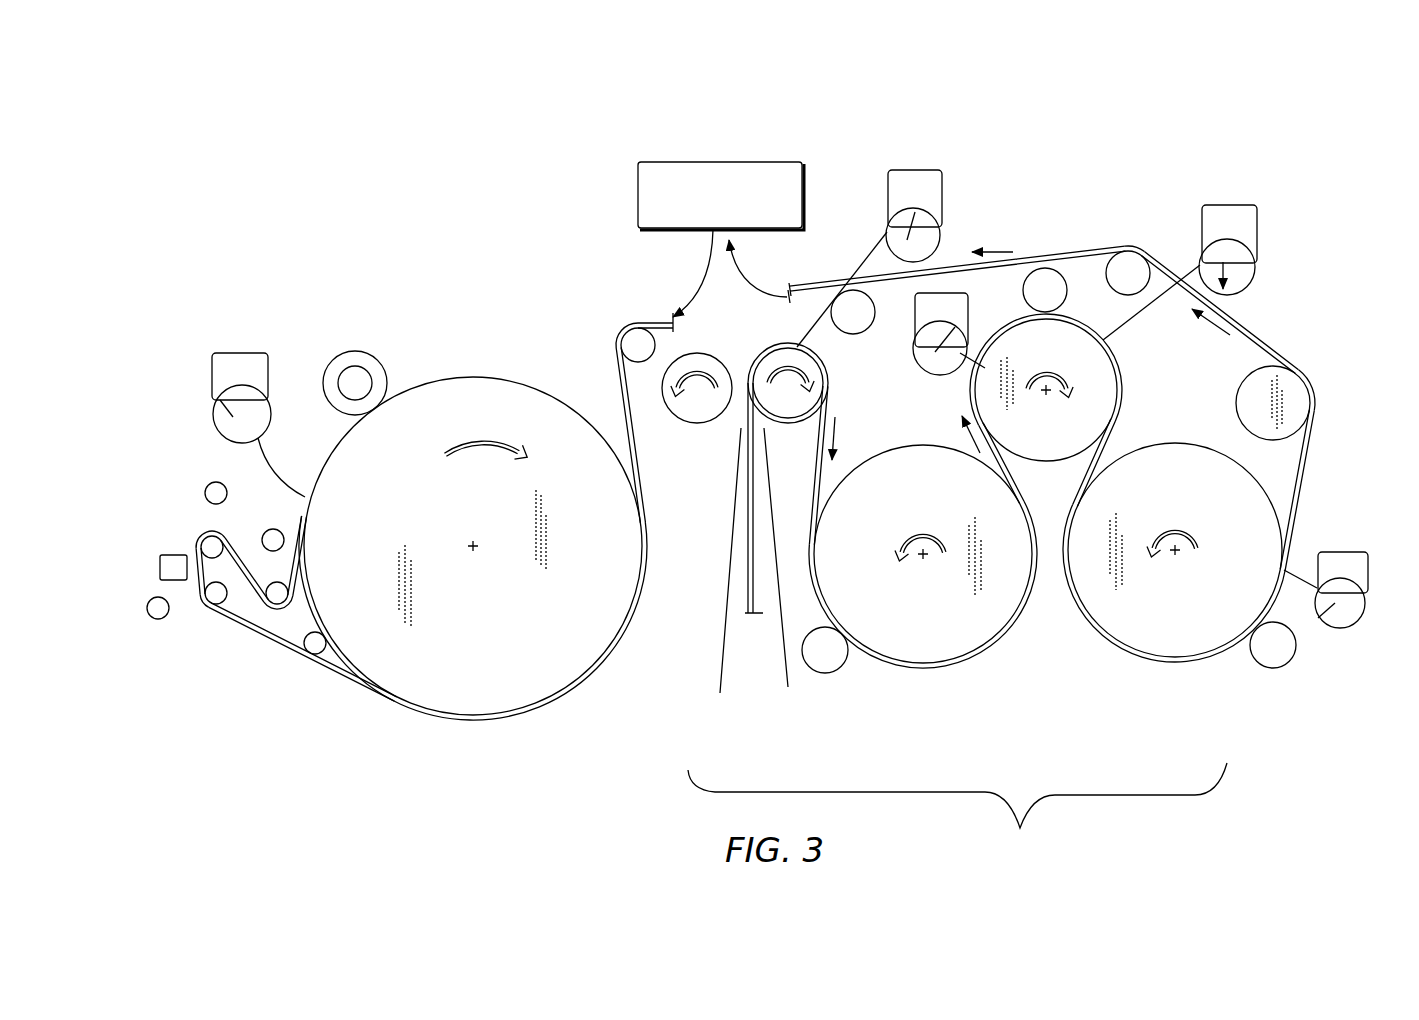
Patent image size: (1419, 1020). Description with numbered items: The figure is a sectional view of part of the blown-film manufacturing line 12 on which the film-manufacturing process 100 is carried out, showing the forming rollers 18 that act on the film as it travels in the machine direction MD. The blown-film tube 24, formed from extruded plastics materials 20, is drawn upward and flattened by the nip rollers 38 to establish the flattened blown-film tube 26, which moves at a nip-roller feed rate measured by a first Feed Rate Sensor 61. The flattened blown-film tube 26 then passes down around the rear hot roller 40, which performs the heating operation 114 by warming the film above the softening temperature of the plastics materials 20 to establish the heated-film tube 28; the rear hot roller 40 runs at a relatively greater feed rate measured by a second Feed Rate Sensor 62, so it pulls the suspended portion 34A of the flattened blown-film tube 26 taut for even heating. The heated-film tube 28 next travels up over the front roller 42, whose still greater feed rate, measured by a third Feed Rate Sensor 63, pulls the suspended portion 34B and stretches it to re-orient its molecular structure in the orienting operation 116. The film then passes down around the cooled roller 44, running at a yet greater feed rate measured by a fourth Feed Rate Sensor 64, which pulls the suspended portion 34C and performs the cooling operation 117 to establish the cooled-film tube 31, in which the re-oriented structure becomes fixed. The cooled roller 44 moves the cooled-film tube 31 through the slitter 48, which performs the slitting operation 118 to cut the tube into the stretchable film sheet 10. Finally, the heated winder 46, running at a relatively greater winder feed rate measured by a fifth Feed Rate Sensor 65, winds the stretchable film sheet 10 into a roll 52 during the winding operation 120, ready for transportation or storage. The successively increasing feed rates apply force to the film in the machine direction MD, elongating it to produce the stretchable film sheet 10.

The film-manufacturing process 100 is at (263, 172).
The slitting operation 118 is at (787, 138).
The blown-film manufacturing line 12 is at (1233, 180).
The slitter 48 is at (807, 205).
The first Feed Rate Sensor 61 is at (943, 188).
The second Feed Rate Sensor 62 is at (970, 313).
The third Feed Rate Sensor 63 is at (1258, 237).
The fourth Feed Rate Sensor 64 is at (1368, 583).
The fifth Feed Rate Sensor 65 is at (270, 375).
The roll 52 is at (342, 350).
The winder 46 is at (355, 383).
The winding operation 120 is at (399, 373).
The stretchable film sheet 10 is at (620, 390).
The nip rollers 38 is at (782, 403).
The flattened blown-film tube 26 is at (827, 410).
The blown-film tube 24 is at (788, 687).
The portion of flattened blown-film tube 34A is at (847, 473).
The portion of heated-film tube 34B is at (1012, 483).
The portion of heated-film tube 34C is at (1112, 453).
The heated-film tube 28 is at (1025, 495).
The front roller 42 is at (1052, 345).
The rear hot roller 40 is at (928, 627).
The plastics materials 20 is at (1128, 388).
The cooled roller 44 is at (1153, 630).
The cooled-film tube 31 is at (1307, 460).
The machine direction MD is at (1310, 492).
The orienting operation 116 is at (1050, 570).
The heating operation 114 is at (1027, 656).
The cooling operation 117 is at (1232, 683).
The forming rollers 18 is at (957, 822).